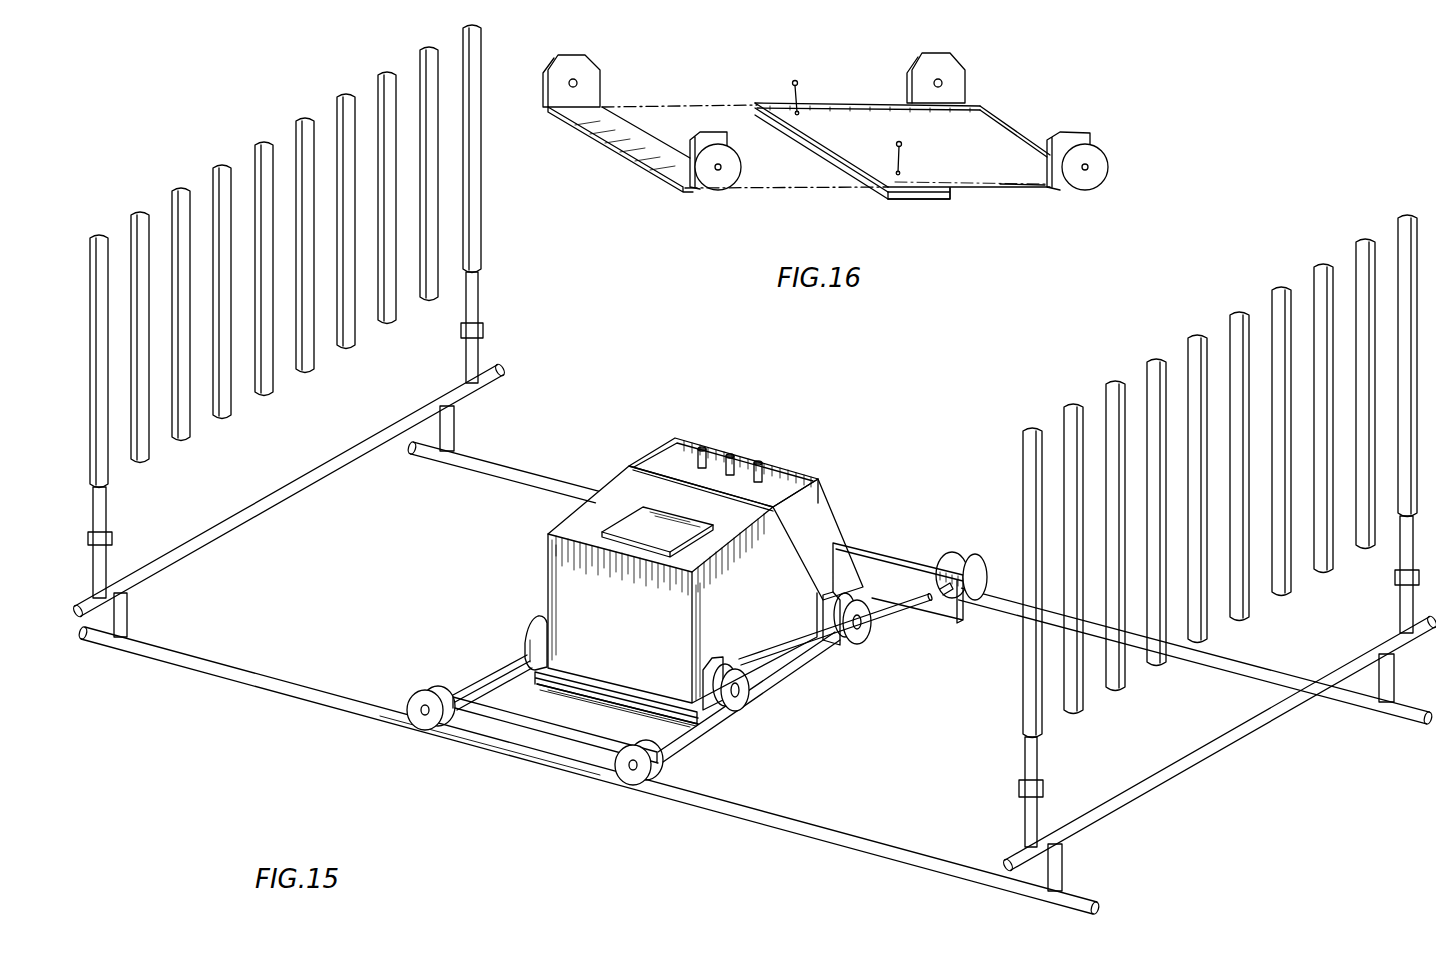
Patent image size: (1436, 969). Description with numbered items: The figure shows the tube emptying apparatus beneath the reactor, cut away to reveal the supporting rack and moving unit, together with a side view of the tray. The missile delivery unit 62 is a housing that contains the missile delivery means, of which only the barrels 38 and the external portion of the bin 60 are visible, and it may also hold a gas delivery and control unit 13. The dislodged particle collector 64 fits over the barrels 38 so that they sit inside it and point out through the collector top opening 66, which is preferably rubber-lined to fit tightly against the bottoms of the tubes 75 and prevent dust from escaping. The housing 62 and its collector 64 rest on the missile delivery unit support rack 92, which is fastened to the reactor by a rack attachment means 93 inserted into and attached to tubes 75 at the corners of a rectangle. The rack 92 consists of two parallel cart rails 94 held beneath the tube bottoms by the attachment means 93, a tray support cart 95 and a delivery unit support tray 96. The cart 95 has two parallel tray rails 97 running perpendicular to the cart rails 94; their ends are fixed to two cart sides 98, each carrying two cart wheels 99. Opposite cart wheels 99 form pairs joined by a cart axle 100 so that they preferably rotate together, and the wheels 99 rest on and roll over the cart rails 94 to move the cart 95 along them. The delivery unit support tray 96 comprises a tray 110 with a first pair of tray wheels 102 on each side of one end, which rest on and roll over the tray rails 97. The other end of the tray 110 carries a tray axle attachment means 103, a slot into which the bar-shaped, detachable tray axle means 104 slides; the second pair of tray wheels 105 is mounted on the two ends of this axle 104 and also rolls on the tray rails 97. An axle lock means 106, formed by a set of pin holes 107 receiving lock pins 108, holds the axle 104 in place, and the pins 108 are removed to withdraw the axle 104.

In FIG. 15, the gas delivery and control unit 13 is at (826, 482).
In FIG. 15, the barrels 38 is at (737, 472).
In FIG. 15, the bin 60 is at (628, 493).
In FIG. 15, the missile delivery unit 62 is at (597, 495).
In FIG. 15, the dislodged particle collector 64 is at (830, 520).
In FIG. 15, the collector top opening 66 is at (708, 457).
In FIG. 15, the tubes 75 is at (482, 220).
In FIG. 15, the missile delivery unit support rack 92 is at (221, 749).
In FIG. 15, the rack attachment means 93 is at (480, 302).
In FIG. 15, the cart rails 94 is at (192, 658).
In FIG. 15, the tray support cart 95 is at (610, 763).
In FIG. 16, the delivery unit support tray 96 is at (1078, 97).
In FIG. 15, the delivery unit support tray 96 is at (673, 677).
In FIG. 15, the tray rails 97 is at (513, 673).
In FIG. 15, the cart sides 98 is at (875, 545).
In FIG. 15, the cart wheels 99 is at (410, 730).
In FIG. 15, the cart axle 100 is at (477, 677).
In FIG. 16, the first pair of tray wheels 102 is at (1107, 183).
In FIG. 15, the first pair of tray wheels 102 is at (865, 632).
In FIG. 16, the tray axle attachment means 103 is at (933, 197).
In FIG. 15, the tray axle attachment means 103 is at (603, 690).
In FIG. 16, the tray axle means 104 is at (622, 153).
In FIG. 16, the second pair of tray wheels 105 is at (552, 63).
In FIG. 16, the axle lock means 106 is at (793, 108).
In FIG. 16, the pin holes 107 is at (902, 173).
In FIG. 16, the lock pins 108 is at (797, 92).
In FIG. 16, the tray 110 is at (1013, 183).
In FIG. 15, the tray 110 is at (570, 688).